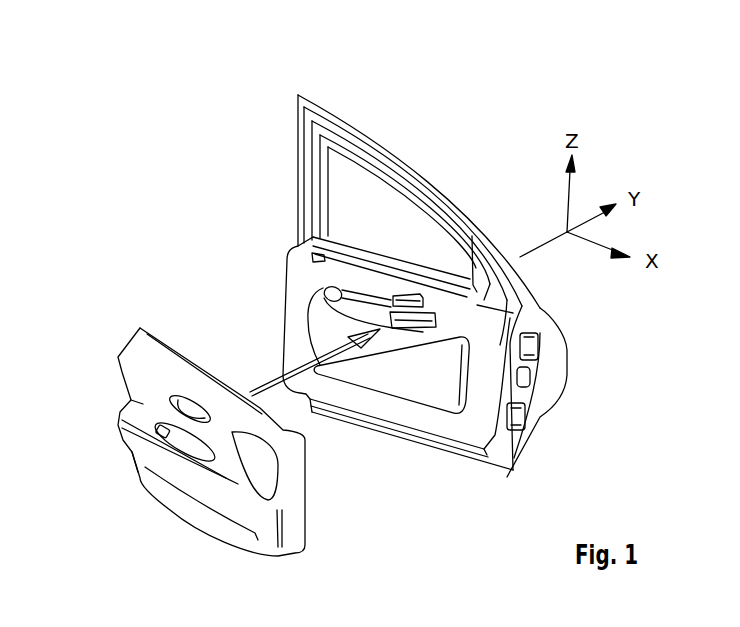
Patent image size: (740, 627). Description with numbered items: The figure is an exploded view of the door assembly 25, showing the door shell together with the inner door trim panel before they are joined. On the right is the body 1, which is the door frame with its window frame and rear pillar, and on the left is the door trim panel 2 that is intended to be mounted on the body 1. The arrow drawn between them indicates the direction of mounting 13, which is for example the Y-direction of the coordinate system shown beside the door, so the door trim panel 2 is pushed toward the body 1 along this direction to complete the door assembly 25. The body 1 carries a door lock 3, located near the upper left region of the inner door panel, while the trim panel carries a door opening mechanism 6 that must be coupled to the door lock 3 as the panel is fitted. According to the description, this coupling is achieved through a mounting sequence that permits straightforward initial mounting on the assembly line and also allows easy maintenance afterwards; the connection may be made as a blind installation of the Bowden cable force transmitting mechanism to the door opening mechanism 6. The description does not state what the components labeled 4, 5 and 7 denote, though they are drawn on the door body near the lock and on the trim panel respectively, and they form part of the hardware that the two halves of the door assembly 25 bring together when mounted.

The body 1 is at (422, 286).
The door trim panel 2 is at (206, 422).
The door lock 3 is at (281, 318).
The door handle 4 is at (370, 298).
The handle housing 5 is at (427, 302).
The door opening mechanism 6 is at (140, 400).
The pull handle 7 is at (180, 397).
The direction of mounting 13 is at (358, 343).
The door assembly 25 is at (439, 93).